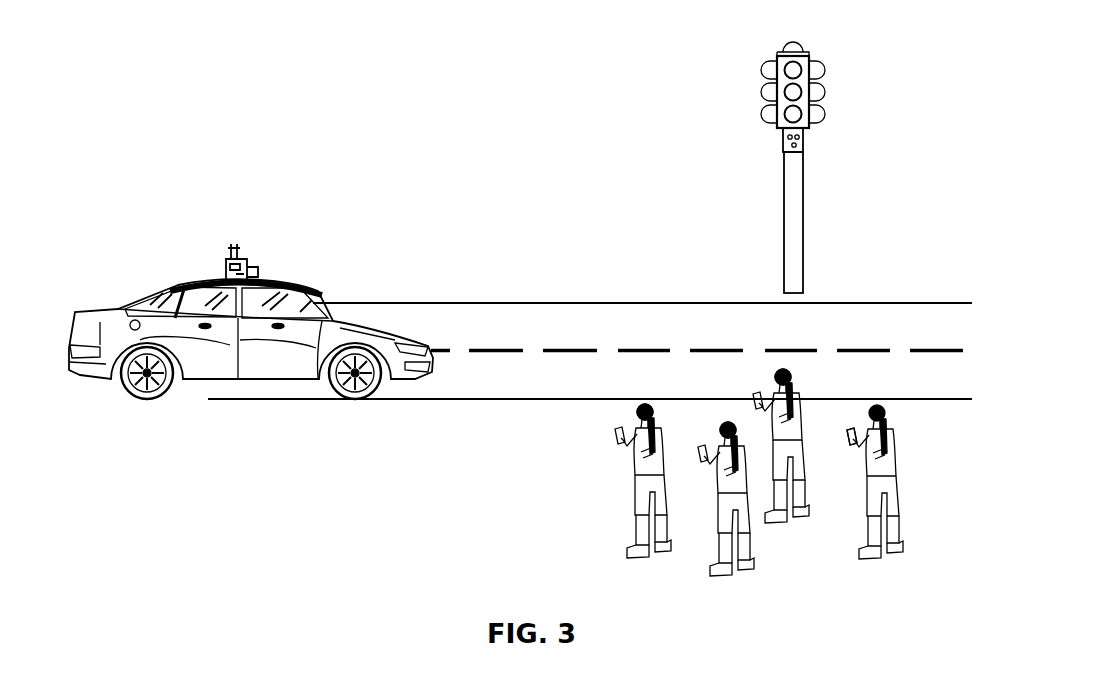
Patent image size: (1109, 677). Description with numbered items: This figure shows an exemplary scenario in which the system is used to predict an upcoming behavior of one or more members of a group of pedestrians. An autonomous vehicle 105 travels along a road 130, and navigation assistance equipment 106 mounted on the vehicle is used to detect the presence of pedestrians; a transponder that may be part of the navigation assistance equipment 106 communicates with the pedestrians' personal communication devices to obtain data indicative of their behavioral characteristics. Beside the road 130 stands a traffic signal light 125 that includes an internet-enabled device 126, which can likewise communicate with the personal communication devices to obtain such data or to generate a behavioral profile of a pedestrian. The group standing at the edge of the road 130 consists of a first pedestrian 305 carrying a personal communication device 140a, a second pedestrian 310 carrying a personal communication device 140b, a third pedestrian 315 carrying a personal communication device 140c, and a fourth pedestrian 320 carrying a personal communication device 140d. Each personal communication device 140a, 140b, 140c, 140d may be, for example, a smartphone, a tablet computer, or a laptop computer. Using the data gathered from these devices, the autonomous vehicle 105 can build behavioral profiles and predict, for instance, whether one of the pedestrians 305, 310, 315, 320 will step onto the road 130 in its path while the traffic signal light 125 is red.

The autonomous vehicle 105 is at (165, 280).
The navigation assistance equipment 106 is at (261, 250).
The traffic signal light 125 is at (829, 60).
The internet-enabled device 126 is at (780, 141).
The road 130 is at (543, 291).
The personal communication device 140a is at (618, 432).
The personal communication device 140b is at (703, 443).
The personal communication device 140c is at (757, 392).
The personal communication device 140d is at (852, 430).
The first pedestrian 305 is at (645, 401).
The second pedestrian 310 is at (728, 419).
The third pedestrian 315 is at (790, 365).
The fourth pedestrian 320 is at (896, 430).